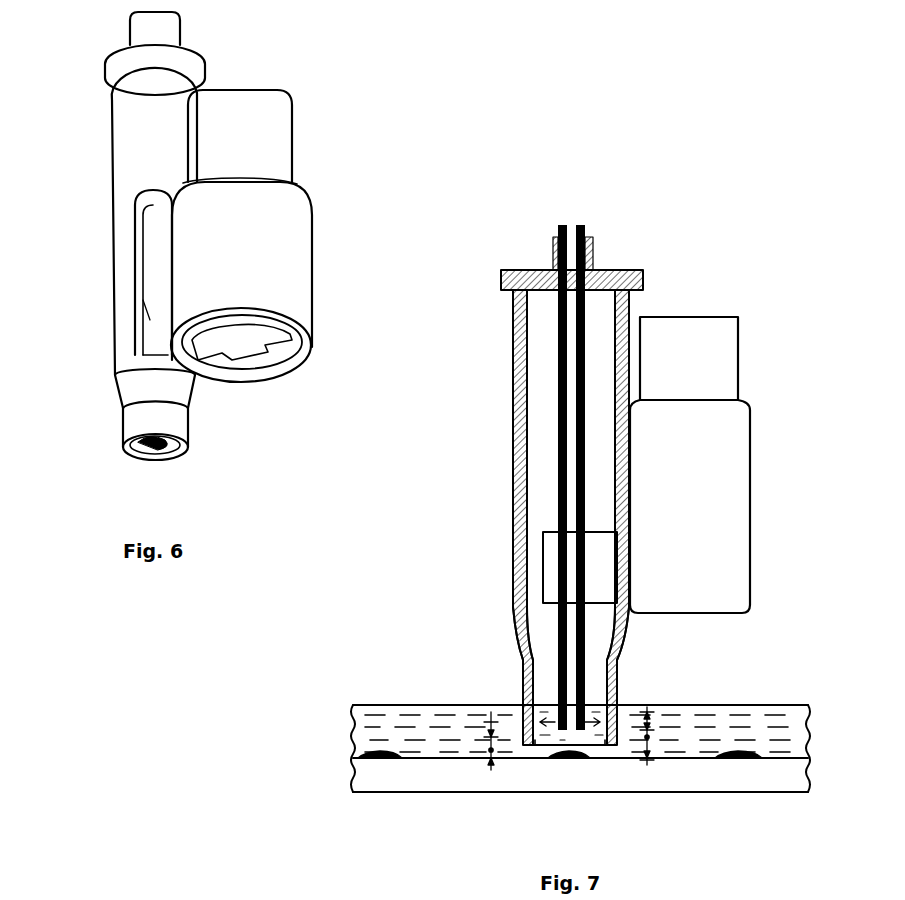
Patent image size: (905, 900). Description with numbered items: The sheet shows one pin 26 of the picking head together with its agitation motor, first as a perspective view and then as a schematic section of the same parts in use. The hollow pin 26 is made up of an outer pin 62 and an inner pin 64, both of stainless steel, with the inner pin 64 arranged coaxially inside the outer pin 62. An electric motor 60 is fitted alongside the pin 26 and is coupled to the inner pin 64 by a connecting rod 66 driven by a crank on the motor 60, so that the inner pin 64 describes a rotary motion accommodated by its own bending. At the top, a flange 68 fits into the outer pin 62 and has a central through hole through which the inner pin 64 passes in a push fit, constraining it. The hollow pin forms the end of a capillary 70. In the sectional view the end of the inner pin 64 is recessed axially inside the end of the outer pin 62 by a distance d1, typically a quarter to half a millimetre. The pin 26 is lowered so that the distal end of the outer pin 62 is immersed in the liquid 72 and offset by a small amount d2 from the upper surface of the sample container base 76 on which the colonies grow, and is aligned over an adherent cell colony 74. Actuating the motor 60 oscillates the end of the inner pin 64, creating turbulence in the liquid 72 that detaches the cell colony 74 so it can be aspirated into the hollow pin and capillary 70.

In FIG. 6, the pin 26 is at (113, 188).
In FIG. 7, the pin 26 is at (515, 443).
In FIG. 6, the electric motor 60 is at (313, 270).
In FIG. 7, the electric motor 60 is at (752, 505).
In FIG. 6, the outer pin 62 is at (188, 422).
In FIG. 7, the outer pin 62 is at (514, 595).
In FIG. 6, the inner pin 64 is at (155, 445).
In FIG. 7, the inner pin 64 is at (558, 495).
In FIG. 6, the connecting rod 66 is at (152, 328).
In FIG. 7, the connecting rod 66 is at (543, 565).
In FIG. 7, the flange 68 is at (622, 272).
In FIG. 7, the capillary 70 is at (538, 685).
In FIG. 7, the liquid 72 is at (390, 708).
In FIG. 7, the adherent cell colony 74 is at (385, 757).
In FIG. 7, the sample container base 76 is at (380, 792).
In FIG. 7, the distance d1 is at (650, 740).
In FIG. 7, the offset d2 is at (490, 750).